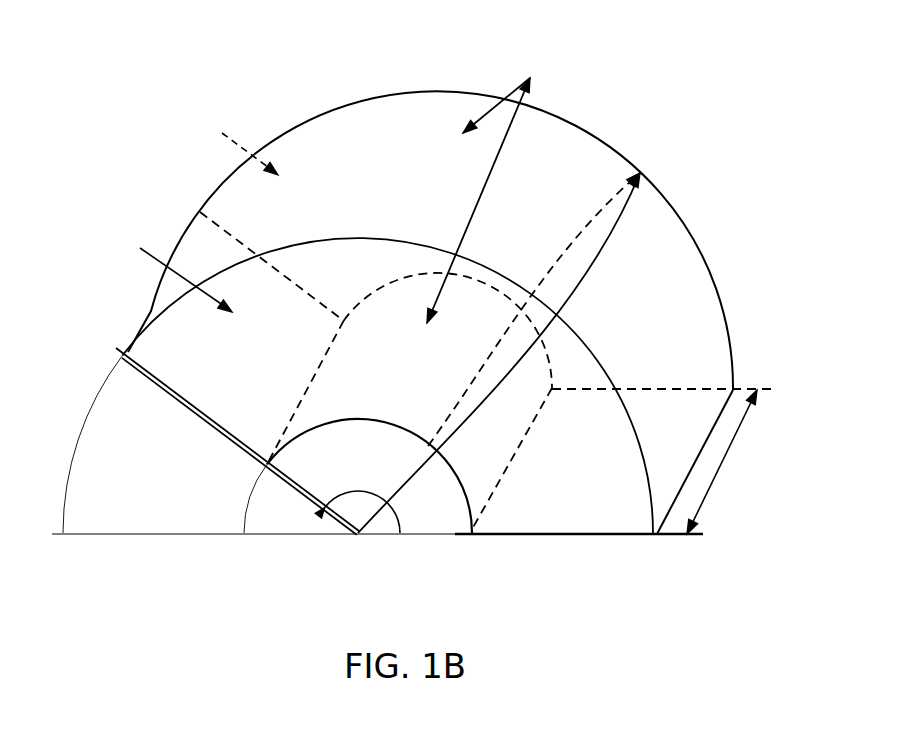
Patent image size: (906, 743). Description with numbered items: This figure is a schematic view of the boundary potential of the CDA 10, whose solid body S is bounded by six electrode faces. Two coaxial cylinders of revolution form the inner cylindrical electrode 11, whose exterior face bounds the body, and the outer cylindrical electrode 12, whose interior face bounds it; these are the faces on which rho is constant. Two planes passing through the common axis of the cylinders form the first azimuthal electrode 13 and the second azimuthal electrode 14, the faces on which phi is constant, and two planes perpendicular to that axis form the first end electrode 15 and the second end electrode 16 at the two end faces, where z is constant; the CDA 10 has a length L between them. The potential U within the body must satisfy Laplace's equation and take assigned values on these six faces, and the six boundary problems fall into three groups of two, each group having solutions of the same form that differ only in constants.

The CDA 10 is at (118, 106).
The inner cylindrical electrode 11 is at (475, 443).
The outer cylindrical electrode 12 is at (586, 173).
The first azimuthal electrode 13 is at (185, 357).
The second azimuthal electrode 14 is at (580, 503).
The first end electrode 15 is at (317, 467).
The second end electrode 16 is at (397, 91).